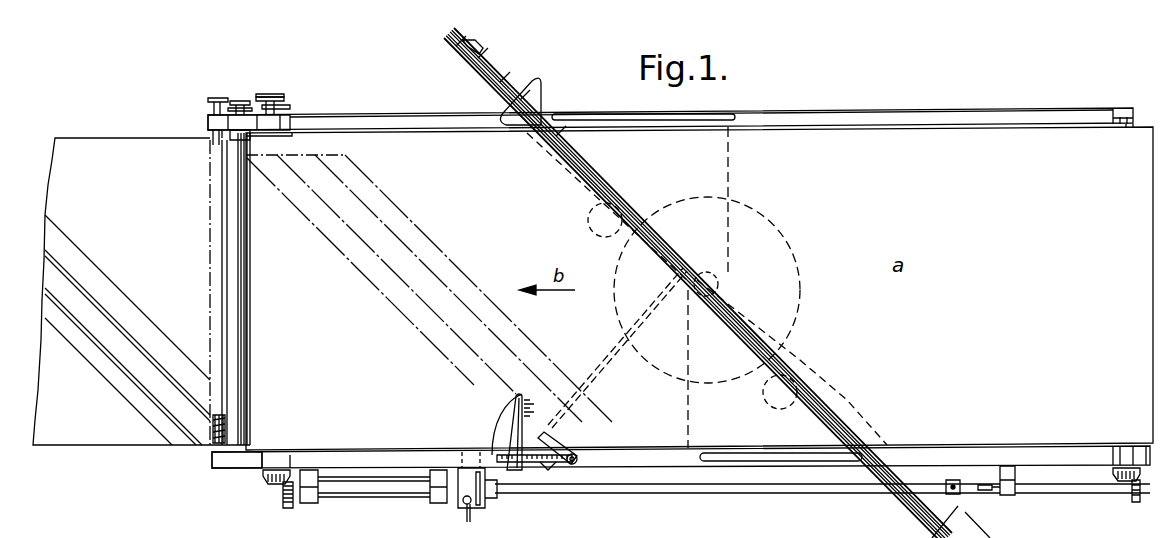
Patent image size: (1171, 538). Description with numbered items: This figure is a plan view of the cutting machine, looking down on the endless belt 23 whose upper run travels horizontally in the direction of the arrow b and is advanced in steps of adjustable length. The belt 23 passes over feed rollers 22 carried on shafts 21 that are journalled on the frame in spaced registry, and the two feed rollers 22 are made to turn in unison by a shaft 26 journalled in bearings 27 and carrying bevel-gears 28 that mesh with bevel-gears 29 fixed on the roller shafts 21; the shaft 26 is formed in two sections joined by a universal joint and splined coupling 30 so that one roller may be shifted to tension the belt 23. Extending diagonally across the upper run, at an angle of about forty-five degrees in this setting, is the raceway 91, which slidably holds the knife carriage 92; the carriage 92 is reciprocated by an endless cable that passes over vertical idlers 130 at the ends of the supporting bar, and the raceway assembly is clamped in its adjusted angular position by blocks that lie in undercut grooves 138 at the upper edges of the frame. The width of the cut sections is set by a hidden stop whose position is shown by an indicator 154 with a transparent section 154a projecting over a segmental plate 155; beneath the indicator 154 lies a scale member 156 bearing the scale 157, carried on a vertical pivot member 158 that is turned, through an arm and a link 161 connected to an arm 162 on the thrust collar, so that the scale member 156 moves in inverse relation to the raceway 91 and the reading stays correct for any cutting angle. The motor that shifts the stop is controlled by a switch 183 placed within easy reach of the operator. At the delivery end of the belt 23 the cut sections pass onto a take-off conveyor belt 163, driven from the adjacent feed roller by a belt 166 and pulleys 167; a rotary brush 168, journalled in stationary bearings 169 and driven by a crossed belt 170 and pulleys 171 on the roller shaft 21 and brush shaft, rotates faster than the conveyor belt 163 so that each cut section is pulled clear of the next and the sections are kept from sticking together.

The shaft 21 is at (292, 119).
The feed roller 22 is at (296, 131).
The endless belt 23 is at (699, 288).
The shaft 26 is at (377, 494).
The bearing 27 is at (310, 499).
The bevel-gear 28 is at (290, 498).
The bevel-gear 29 is at (272, 482).
The universal joint and splined coupling 30 is at (988, 487).
The raceway 91 is at (793, 369).
The carriage 92 is at (517, 96).
The vertical idler 130 is at (463, 42).
The undercut groove 138 is at (684, 104).
The indicator 154 is at (503, 403).
The transparent section 154a is at (520, 410).
The segmental plate 155 is at (498, 421).
The scale member 156 is at (497, 446).
The scale 157 is at (547, 463).
The vertical pivot member 158 is at (592, 463).
The link 161 is at (599, 363).
The arm 162 is at (704, 268).
The conveyor belt 163 is at (110, 432).
The belt 166 is at (254, 100).
The pulley 167 is at (234, 99).
The rotary brush 168 is at (213, 440).
The stationary bearing 169 is at (212, 123).
The crossed belt 170 is at (243, 104).
The pulley 171 is at (213, 97).
The switch 183 is at (472, 518).